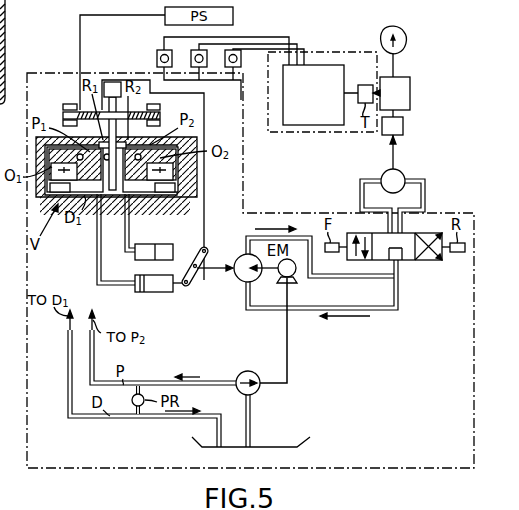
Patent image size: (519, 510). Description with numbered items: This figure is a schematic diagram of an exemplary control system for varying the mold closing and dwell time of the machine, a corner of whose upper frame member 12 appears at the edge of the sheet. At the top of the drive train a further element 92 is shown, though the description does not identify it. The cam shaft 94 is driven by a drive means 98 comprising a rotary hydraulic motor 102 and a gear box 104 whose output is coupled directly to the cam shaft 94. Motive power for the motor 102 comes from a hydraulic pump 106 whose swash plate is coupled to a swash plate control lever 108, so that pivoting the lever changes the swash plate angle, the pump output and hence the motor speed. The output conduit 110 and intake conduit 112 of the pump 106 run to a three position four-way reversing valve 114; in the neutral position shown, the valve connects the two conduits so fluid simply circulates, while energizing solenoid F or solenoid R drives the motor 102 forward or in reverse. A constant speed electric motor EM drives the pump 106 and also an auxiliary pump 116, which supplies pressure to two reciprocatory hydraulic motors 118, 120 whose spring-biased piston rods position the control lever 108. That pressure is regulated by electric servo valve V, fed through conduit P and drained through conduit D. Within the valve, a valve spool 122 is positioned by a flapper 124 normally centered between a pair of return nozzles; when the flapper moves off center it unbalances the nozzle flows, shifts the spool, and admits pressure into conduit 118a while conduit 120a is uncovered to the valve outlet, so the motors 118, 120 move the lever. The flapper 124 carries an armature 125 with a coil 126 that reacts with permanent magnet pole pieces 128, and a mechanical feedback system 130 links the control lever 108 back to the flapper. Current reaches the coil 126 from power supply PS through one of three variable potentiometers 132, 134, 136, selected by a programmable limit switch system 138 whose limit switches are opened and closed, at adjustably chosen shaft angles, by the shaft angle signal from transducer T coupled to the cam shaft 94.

The upper frame member 12 is at (7, 43).
The engine 92 is at (404, 38).
The cam shaft 94 is at (410, 78).
The drive means 98 is at (408, 156).
The rotary hydraulic motor 102 is at (405, 180).
The gear box 104 is at (404, 125).
The hydraulic pump 106 is at (236, 252).
The swash plate control lever 108 is at (196, 282).
The output conduit 110 is at (310, 233).
The intake conduit 112 is at (308, 311).
The three position four-way reversing valve 114 is at (420, 261).
The auxiliary pump 116 is at (246, 371).
The reciprocatory hydraulic motor 118 is at (155, 247).
The conduit 118a is at (123, 238).
The reciprocatory hydraulic motor 120 is at (145, 292).
The conduit 120a is at (98, 270).
The valve spool 122 is at (157, 193).
The flapper 124 is at (112, 82).
The armature 125 is at (153, 117).
The coil 126 is at (84, 111).
The permanent magnet pole pieces 128 is at (67, 106).
The mechanical feedback system 130 is at (206, 137).
The variable potentiometer 132 is at (163, 50).
The variable potentiometer 134 is at (204, 49).
The variable potentiometer 136 is at (241, 52).
The programmable limit switch system 138 is at (312, 70).